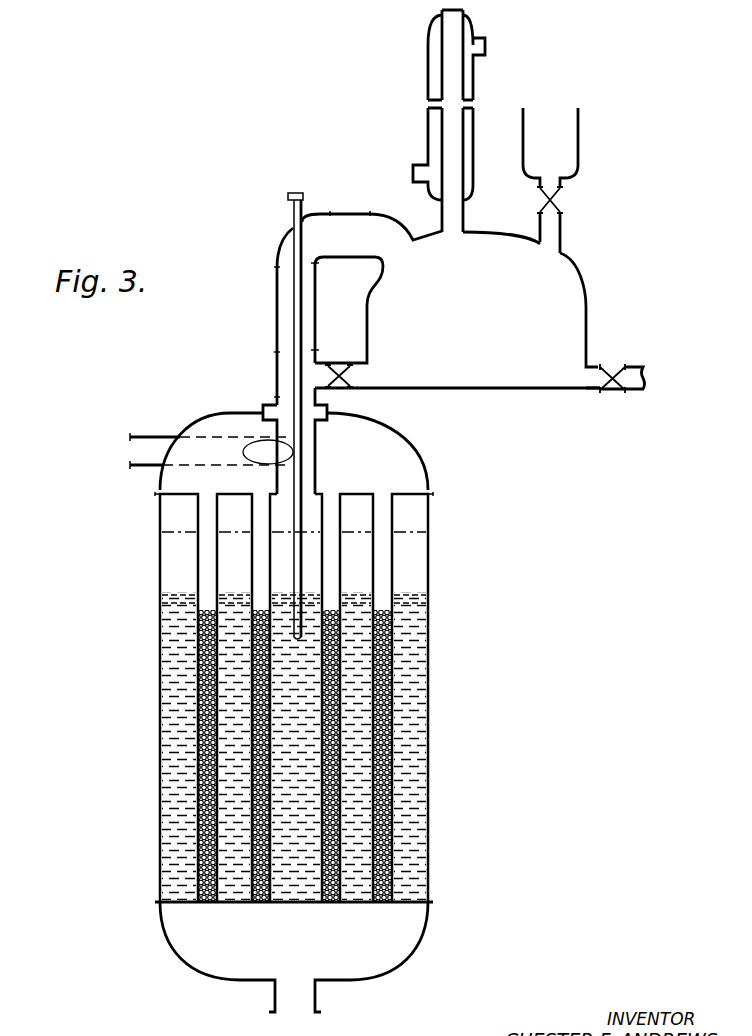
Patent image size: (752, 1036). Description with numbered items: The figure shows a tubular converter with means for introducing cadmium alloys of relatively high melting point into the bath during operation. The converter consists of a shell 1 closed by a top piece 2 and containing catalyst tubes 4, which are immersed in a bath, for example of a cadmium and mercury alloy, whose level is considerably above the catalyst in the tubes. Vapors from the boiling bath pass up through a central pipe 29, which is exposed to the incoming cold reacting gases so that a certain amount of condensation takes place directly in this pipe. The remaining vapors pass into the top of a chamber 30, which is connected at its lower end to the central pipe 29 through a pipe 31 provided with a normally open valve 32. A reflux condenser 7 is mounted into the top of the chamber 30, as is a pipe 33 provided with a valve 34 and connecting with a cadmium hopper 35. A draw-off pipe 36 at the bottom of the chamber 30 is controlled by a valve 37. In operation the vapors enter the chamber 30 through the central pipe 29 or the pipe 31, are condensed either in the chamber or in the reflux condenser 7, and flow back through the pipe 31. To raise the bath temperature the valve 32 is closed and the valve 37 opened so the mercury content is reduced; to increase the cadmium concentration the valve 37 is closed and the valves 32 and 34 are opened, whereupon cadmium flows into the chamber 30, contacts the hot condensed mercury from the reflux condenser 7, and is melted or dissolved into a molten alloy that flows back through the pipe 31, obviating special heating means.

The shell 1 is at (430, 527).
The top piece 2 is at (415, 452).
The catalyst tubes 4 is at (430, 740).
The reflux condenser 7 is at (452, 140).
The central pipe 29 is at (280, 375).
The chamber 30 is at (560, 277).
The pipe 31 is at (366, 360).
The valve 32 is at (342, 390).
The pipe 33 is at (546, 229).
The valve 34 is at (560, 204).
The cadmium hopper 35 is at (563, 131).
The draw-off pipe 36 is at (601, 363).
The valve 37 is at (601, 393).